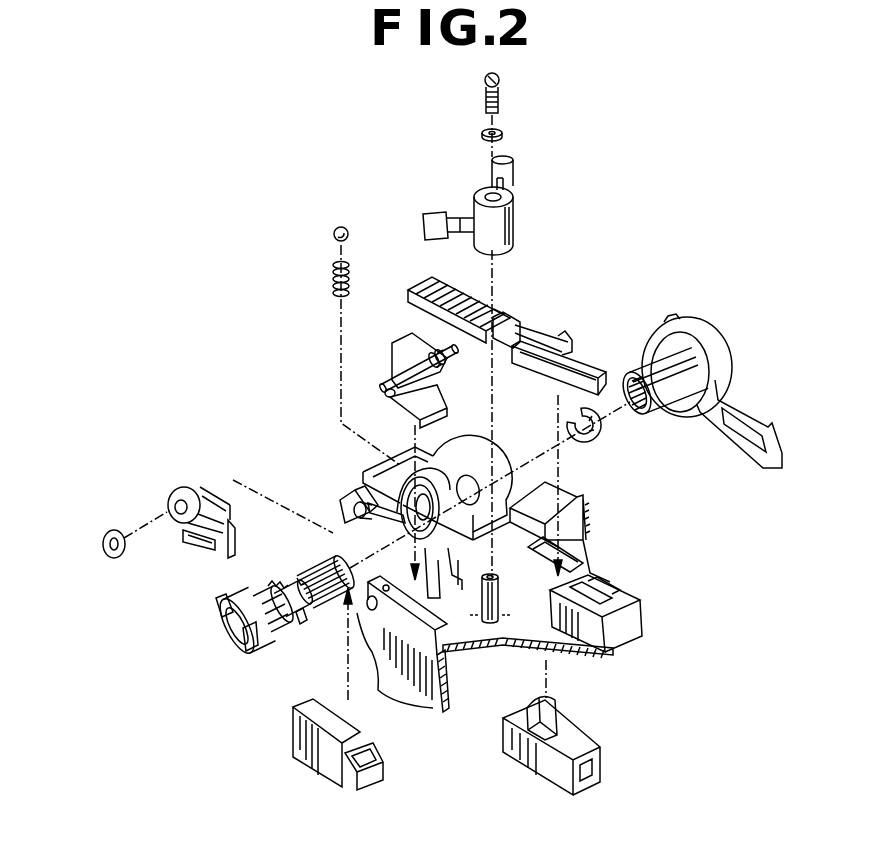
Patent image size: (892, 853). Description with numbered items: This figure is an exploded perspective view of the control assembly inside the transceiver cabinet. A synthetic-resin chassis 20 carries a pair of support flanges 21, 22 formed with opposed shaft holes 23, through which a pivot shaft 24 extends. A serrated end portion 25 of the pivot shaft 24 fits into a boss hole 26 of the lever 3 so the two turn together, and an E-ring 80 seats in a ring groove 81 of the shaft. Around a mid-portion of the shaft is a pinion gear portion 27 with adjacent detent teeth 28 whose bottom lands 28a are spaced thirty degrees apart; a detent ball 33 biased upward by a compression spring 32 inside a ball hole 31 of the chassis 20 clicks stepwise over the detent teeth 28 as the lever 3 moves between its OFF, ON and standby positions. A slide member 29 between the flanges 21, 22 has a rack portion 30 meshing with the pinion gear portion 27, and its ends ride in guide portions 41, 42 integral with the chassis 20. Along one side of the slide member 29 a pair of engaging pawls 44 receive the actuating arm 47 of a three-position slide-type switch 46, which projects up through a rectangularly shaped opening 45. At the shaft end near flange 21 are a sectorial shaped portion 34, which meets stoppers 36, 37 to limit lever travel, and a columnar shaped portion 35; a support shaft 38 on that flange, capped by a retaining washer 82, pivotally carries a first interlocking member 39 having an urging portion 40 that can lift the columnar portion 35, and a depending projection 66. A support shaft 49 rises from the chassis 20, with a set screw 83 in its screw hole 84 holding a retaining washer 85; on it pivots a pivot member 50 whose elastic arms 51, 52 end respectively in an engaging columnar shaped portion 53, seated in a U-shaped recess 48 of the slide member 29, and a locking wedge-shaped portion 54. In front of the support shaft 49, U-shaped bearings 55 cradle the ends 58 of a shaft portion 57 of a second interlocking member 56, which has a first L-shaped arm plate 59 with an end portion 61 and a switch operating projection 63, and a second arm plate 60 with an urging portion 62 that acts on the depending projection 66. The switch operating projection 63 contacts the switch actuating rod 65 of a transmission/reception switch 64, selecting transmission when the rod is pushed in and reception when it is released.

The lever 3 is at (745, 410).
The chassis 20 is at (493, 566).
The support flange 21 is at (352, 516).
The support flange 22 is at (462, 470).
The shaft holes 23 is at (490, 477).
The pivot shaft 24 is at (306, 596).
The serrated end portion 25 is at (326, 568).
The boss hole 26 is at (625, 381).
The pinion gear portion 27 is at (301, 622).
The detent teeth 28 is at (278, 630).
The bottom lands 28a is at (265, 594).
The slide member 29 is at (548, 367).
The rack portion 30 is at (440, 283).
The ball hole 31 is at (427, 524).
The compression spring 32 is at (332, 280).
The detent ball 33 is at (334, 231).
The sectorial shaped portion 34 is at (247, 645).
The columnar shaped portion 35 is at (215, 605).
The stopper 36 is at (437, 470).
The stopper 37 is at (420, 558).
The support shaft 38 is at (356, 490).
The first interlocking member 39 is at (190, 487).
The urging portion 40 is at (233, 527).
The guide portion 41 is at (390, 524).
The guide portion 42 is at (610, 593).
The engaging pawls 44 is at (566, 335).
The rectangularly shaped opening 45 is at (582, 560).
The three-position slide-type switch 46 is at (506, 738).
The actuating arm 47 is at (556, 712).
The U-shaped recess 48 is at (508, 318).
The support shaft 49 is at (500, 603).
The pivot member 50 is at (514, 226).
The arm 51 is at (496, 182).
The arm 52 is at (459, 236).
The engaging columnar shaped portion 53 is at (514, 170).
The locking wedge-shaped portion 54 is at (424, 221).
The U-shaped bearings 55 is at (437, 602).
The second interlocking member 56 is at (414, 356).
The shaft portion 57 is at (441, 380).
The ends 58 is at (384, 383).
The first L-shaped arm plate 59 is at (410, 413).
The second arm plate 60 is at (426, 350).
The end portion 61 is at (440, 404).
The urging portion 62 is at (405, 336).
The switch operating projection 63 is at (383, 398).
The transmission/reception switch 64 is at (325, 775).
The switch actuating rod 65 is at (376, 767).
The depending projection 66 is at (200, 542).
The E-ring 80 is at (602, 440).
The ring groove 81 is at (297, 578).
The retaining washer 82 is at (114, 530).
The set screw 83 is at (500, 100).
The screw hole 84 is at (496, 577).
The retaining washer 85 is at (504, 133).